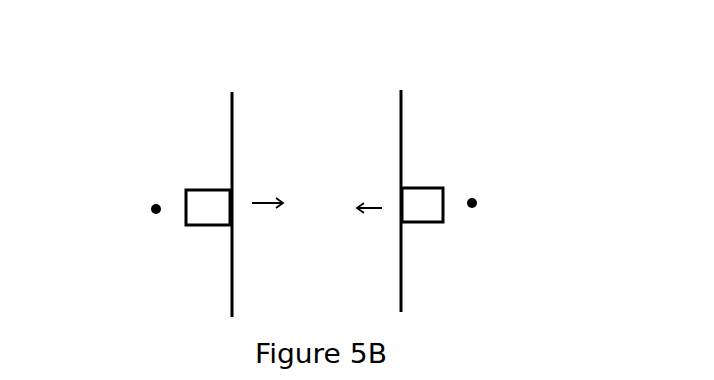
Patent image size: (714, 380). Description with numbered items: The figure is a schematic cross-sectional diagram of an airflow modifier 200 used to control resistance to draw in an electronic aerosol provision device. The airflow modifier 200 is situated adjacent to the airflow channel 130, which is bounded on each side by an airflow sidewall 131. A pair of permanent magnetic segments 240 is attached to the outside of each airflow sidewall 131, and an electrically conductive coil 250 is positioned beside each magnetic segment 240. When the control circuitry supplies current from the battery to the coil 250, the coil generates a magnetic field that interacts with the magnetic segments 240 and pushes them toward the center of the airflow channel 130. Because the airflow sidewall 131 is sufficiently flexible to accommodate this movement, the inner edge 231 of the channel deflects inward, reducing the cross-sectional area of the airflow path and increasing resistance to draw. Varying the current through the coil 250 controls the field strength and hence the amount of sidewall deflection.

The airflow channel 130 is at (338, 128).
The airflow sidewall 131 is at (232, 114).
The airflow modifier 200 is at (453, 117).
The inner edge 231 is at (395, 213).
The magnetic segments 240 is at (195, 236).
The coil 250 is at (138, 205).